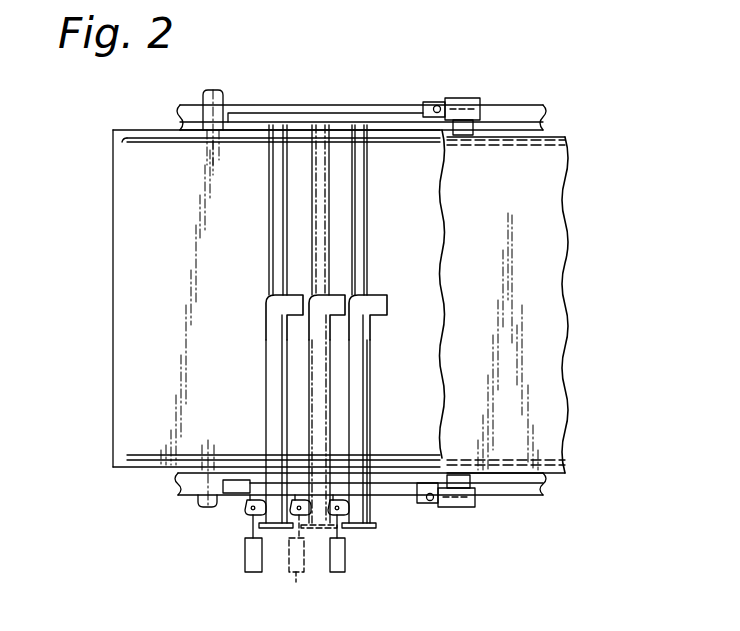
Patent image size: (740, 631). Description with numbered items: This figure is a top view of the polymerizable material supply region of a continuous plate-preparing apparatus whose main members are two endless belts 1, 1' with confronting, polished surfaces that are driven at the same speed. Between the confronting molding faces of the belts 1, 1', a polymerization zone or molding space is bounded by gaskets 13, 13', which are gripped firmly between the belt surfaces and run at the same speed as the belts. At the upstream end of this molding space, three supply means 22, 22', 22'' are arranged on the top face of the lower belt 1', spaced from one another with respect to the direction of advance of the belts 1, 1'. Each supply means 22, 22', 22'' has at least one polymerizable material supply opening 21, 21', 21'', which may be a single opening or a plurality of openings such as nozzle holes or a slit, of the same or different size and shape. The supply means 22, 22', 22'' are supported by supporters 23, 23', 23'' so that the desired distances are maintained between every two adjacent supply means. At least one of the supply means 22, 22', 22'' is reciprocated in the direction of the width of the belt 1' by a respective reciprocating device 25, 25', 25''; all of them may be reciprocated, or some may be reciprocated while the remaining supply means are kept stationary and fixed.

The endless belt 1 is at (525, 305).
The endless belt 1' is at (265, 298).
The gasket 13 is at (333, 113).
The gasket 13' is at (323, 486).
The polymerizable material supply opening 21 is at (268, 304).
The polymerizable material supply opening 21' is at (363, 288).
The polymerizable material supply opening 21'' is at (393, 304).
The supply means 22 is at (254, 421).
The supply means 22' is at (361, 421).
The supply means 22'' is at (385, 421).
The supporter 23 is at (255, 210).
The supporter 23' is at (365, 210).
The supporter 23'' is at (387, 210).
The reciprocating device 25 is at (229, 539).
The reciprocating device 25' is at (278, 553).
The reciprocating device 25'' is at (365, 540).